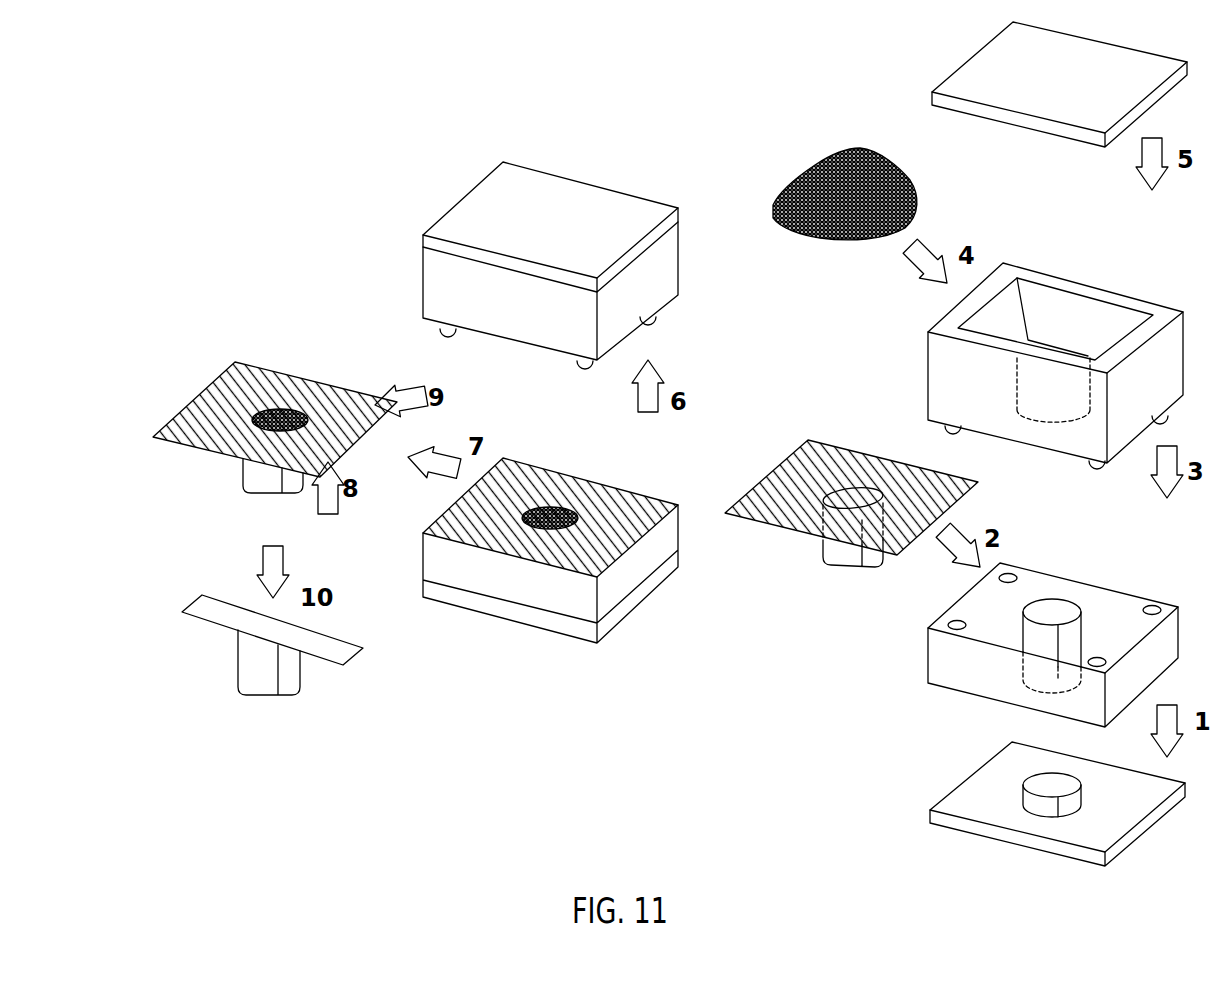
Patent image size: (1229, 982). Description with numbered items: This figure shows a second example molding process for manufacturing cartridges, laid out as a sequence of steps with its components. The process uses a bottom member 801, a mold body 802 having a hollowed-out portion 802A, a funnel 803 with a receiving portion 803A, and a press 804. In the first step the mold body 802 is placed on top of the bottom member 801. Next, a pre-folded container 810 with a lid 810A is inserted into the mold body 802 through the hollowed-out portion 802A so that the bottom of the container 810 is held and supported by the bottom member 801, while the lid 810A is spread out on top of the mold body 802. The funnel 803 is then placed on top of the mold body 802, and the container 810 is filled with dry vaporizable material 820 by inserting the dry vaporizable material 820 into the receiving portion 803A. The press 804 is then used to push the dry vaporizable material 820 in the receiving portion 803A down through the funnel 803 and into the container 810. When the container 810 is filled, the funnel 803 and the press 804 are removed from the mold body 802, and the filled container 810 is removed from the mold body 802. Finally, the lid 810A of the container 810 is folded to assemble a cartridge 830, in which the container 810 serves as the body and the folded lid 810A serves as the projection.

The bottom member 801 is at (953, 803).
The mold body 802 is at (1163, 605).
The hollowed-out portion 802A is at (1052, 610).
The funnel 803 is at (667, 263).
The receiving portion 803A is at (1073, 318).
The press 804 is at (1150, 70).
The pre-folded container 810 is at (848, 568).
The lid 810A is at (828, 462).
The dry vaporizable material 820 is at (838, 148).
The cartridge 830 is at (225, 655).